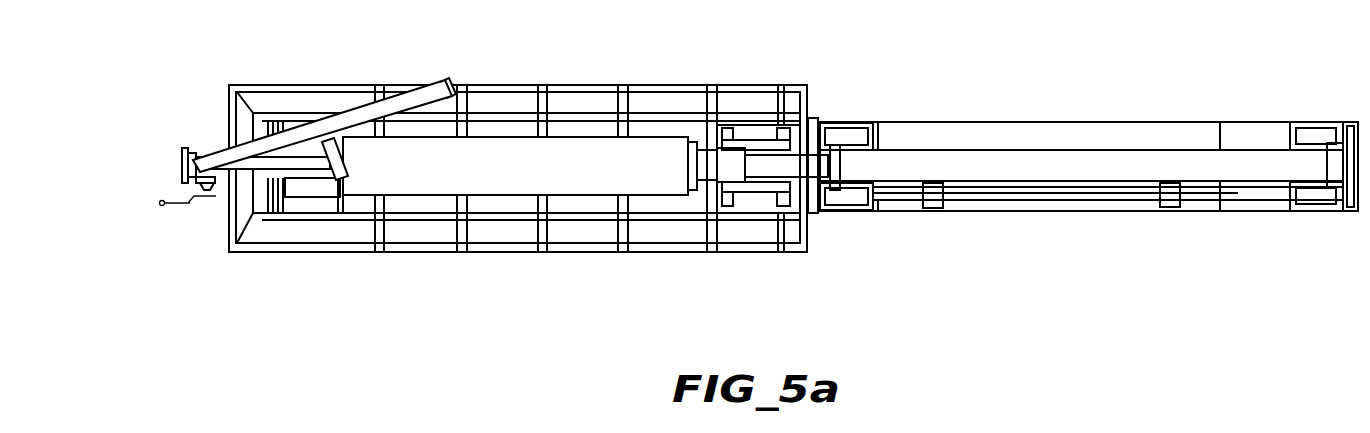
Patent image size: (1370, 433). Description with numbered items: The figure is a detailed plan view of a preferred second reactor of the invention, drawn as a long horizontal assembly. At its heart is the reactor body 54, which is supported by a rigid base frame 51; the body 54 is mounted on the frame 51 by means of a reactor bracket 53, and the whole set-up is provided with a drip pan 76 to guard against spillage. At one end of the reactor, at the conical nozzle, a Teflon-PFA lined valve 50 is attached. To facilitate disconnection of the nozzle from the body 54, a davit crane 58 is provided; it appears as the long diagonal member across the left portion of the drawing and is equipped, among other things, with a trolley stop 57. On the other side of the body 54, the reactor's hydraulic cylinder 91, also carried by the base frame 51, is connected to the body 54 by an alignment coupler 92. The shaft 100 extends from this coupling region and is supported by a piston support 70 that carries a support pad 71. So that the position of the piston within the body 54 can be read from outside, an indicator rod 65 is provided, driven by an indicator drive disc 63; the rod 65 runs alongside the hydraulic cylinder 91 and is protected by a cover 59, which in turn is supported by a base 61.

The Teflon-PFA lined valve 50 is at (198, 150).
The rigid base frame 51 is at (1140, 121).
The reactor bracket 53 is at (279, 207).
The reactor body 54 is at (513, 162).
The trolley stop 57 is at (355, 173).
The davit crane 58 is at (356, 118).
The cover 59 is at (1122, 190).
The base 61 is at (935, 200).
The indicator drive disc 63 is at (762, 160).
The indicator rod 65 is at (1265, 180).
The piston support 70 is at (728, 205).
The support pad 71 is at (743, 195).
The drip pan 76 is at (510, 252).
The hydraulic cylinder 91 is at (1017, 165).
The alignment coupler 92 is at (718, 164).
The shaft 100 is at (815, 163).